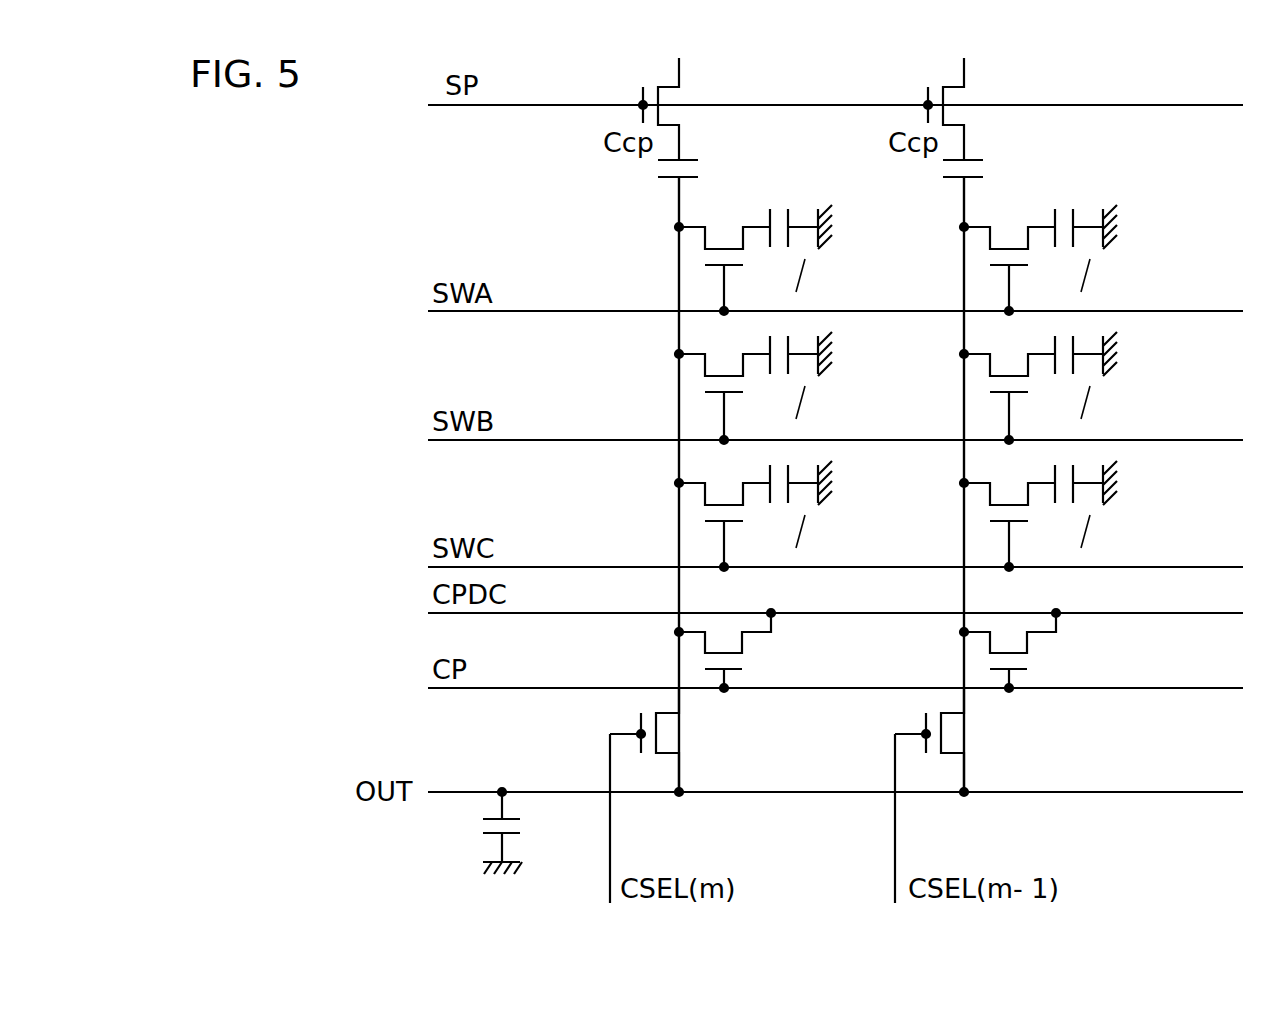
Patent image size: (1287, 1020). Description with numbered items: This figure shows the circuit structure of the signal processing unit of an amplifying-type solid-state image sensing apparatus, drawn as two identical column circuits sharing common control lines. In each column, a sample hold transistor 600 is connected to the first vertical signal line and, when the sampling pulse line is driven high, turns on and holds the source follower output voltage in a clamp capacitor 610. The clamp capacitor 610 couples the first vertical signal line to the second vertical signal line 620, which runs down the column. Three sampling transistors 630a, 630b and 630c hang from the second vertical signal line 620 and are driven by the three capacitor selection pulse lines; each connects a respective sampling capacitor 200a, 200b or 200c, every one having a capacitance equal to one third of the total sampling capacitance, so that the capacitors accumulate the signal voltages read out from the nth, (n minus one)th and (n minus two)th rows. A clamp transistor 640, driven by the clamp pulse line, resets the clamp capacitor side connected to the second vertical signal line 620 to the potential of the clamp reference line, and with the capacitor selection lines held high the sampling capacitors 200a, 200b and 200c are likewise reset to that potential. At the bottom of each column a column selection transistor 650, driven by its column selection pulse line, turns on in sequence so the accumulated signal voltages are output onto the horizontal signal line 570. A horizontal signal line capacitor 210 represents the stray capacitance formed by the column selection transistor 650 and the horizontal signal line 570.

The horizontal signal line 570 is at (1147, 793).
The sample hold transistor 600 is at (676, 100).
The clamp capacitor 610 is at (697, 168).
The second vertical signal line 620 is at (678, 295).
The sampling transistor 630a is at (723, 238).
The sampling transistor 630b is at (722, 365).
The sampling transistor 630c is at (722, 494).
The sampling capacitor 200a is at (780, 210).
The sampling capacitor 200b is at (780, 335).
The sampling capacitor 200c is at (780, 464).
The clamp transistor 640 is at (740, 663).
The column selection transistor 650 is at (692, 732).
The horizontal signal line capacitor 210 is at (483, 828).